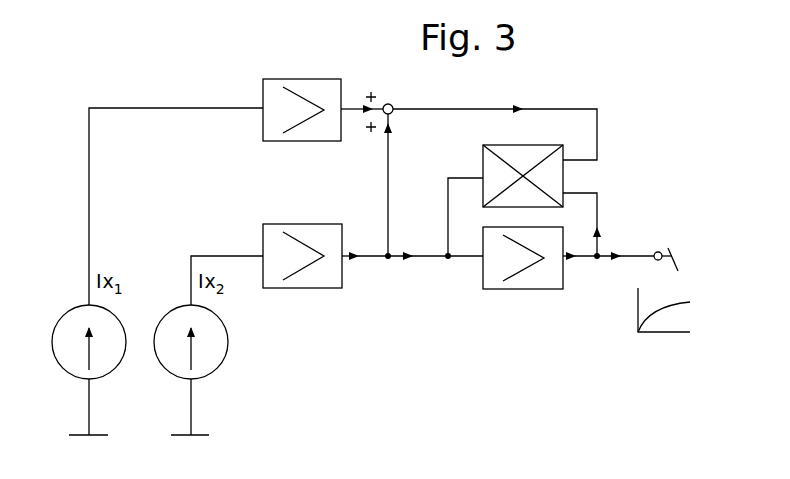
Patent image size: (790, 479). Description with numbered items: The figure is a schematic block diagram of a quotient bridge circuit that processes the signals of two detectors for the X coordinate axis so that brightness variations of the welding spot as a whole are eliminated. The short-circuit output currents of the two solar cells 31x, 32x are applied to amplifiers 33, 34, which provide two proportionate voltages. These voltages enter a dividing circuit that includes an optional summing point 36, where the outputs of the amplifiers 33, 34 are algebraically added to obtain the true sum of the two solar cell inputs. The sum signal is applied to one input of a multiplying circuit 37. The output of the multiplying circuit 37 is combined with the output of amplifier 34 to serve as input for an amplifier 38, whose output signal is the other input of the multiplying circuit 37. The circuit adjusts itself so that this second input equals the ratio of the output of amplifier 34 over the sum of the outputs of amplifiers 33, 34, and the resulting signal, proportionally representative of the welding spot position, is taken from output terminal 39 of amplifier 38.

The solar cell 31x is at (102, 370).
The solar cell 32x is at (205, 370).
The amplifier 33 is at (312, 141).
The amplifier 34 is at (285, 288).
The summing point 36 is at (393, 105).
The multiplying circuit 37 is at (483, 158).
The amplifier 38 is at (523, 289).
The output terminal 39 is at (683, 267).